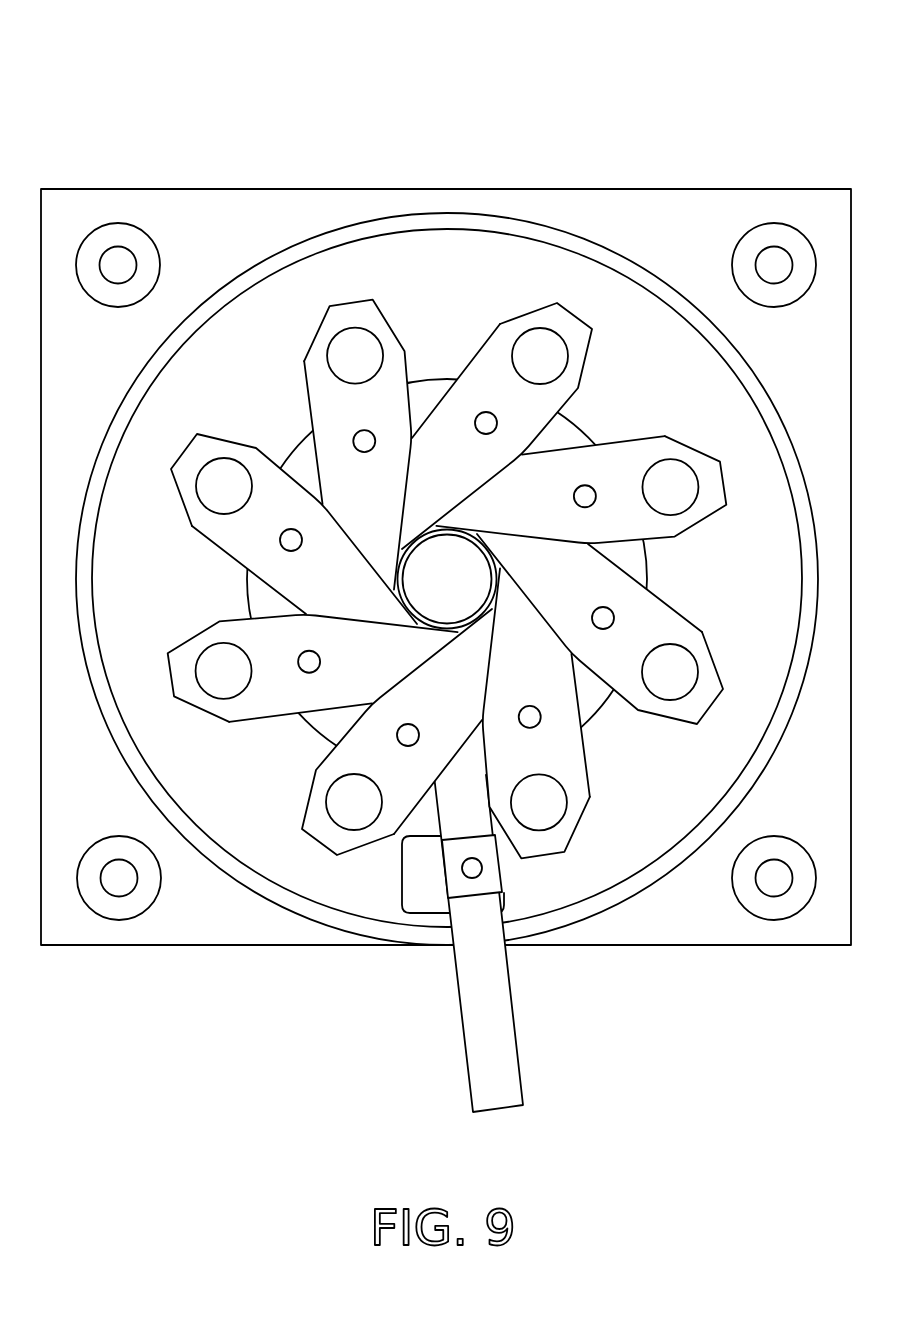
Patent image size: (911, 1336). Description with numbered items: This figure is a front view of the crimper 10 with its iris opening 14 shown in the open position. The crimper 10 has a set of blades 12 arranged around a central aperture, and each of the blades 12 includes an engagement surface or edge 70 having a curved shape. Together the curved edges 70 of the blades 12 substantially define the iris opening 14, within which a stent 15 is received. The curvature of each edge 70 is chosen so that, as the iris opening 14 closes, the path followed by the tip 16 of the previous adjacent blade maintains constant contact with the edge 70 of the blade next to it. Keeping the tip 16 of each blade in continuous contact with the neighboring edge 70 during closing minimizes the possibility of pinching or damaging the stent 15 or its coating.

The crimper 10 is at (755, 108).
The blades 12 is at (672, 613).
The iris opening 14 is at (500, 550).
The stent 15 is at (448, 530).
The tip 16 is at (499, 592).
The engagement surface or edge 70 is at (438, 630).